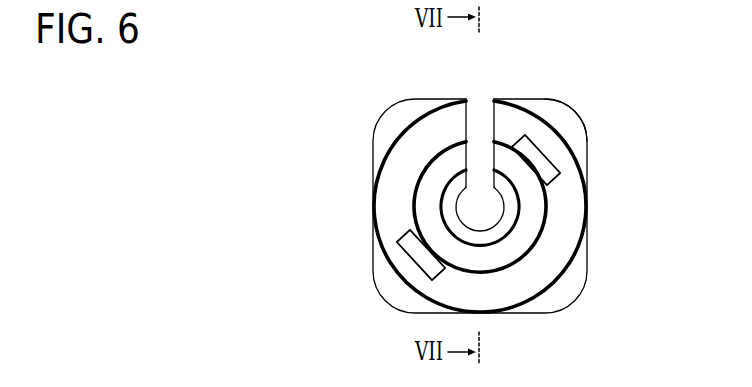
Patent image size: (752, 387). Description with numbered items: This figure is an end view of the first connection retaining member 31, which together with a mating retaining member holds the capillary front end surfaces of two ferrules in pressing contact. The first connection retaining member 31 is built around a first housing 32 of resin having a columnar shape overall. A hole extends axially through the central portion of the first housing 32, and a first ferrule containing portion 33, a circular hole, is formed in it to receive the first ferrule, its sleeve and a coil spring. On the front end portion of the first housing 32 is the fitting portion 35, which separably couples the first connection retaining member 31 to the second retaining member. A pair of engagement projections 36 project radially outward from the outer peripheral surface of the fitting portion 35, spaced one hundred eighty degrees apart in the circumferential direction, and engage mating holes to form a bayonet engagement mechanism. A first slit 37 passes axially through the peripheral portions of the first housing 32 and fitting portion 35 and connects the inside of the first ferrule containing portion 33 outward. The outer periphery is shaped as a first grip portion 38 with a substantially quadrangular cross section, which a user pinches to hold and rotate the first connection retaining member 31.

The first connection retaining member 31 is at (383, 83).
The first housing 32 is at (372, 144).
The first ferrule containing portion 33 is at (467, 224).
The fitting portion 35 is at (548, 207).
The engagement projections 36 is at (544, 154).
The first slit 37 is at (468, 115).
The first grip portion 38 is at (570, 105).